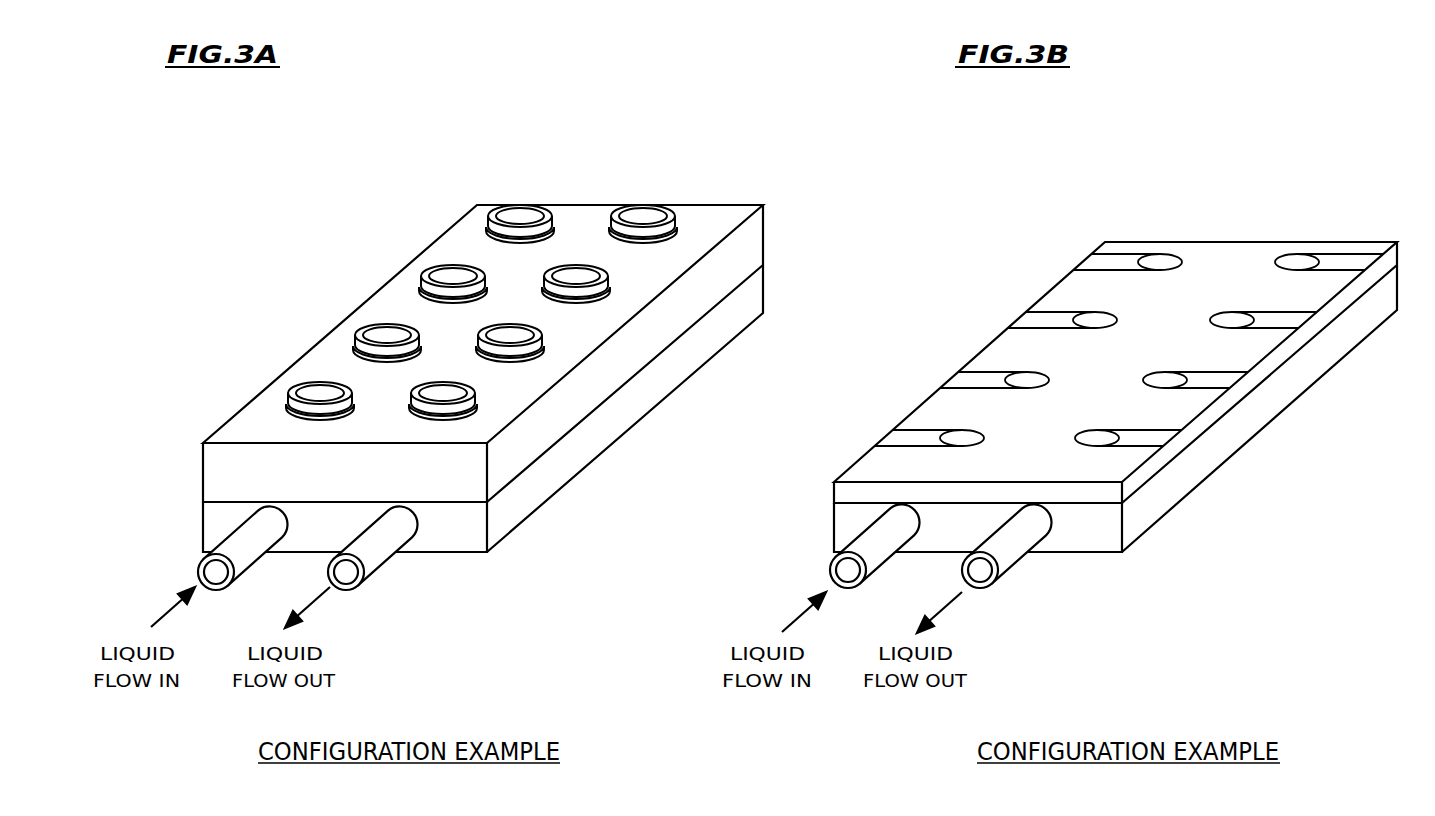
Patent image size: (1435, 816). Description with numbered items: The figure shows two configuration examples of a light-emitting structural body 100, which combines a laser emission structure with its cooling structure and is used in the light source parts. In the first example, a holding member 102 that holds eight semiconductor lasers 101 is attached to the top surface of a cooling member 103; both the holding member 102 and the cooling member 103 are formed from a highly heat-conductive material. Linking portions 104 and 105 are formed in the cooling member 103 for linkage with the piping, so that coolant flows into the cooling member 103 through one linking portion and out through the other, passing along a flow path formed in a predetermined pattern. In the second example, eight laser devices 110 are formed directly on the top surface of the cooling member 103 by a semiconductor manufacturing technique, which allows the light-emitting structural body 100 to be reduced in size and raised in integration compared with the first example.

In FIG. 3A, the light-emitting structural body 100 is at (483, 360).
In FIG. 3B, the light-emitting structural body 100 is at (1097, 381).
In FIG. 3A, the semiconductor lasers 101 is at (440, 262).
In FIG. 3A, the holding member 102 is at (385, 298).
In FIG. 3B, the holding member 102 is at (1115, 372).
In FIG. 3A, the cooling member 103 is at (545, 493).
In FIG. 3B, the cooling member 103 is at (1168, 492).
In FIG. 3A, the linking portion 104 is at (235, 543).
In FIG. 3B, the linking portion 104 is at (867, 537).
In FIG. 3A, the linking portion 105 is at (383, 547).
In FIG. 3B, the linking portion 105 is at (1015, 555).
In FIG. 3B, the laser devices 110 is at (1090, 317).